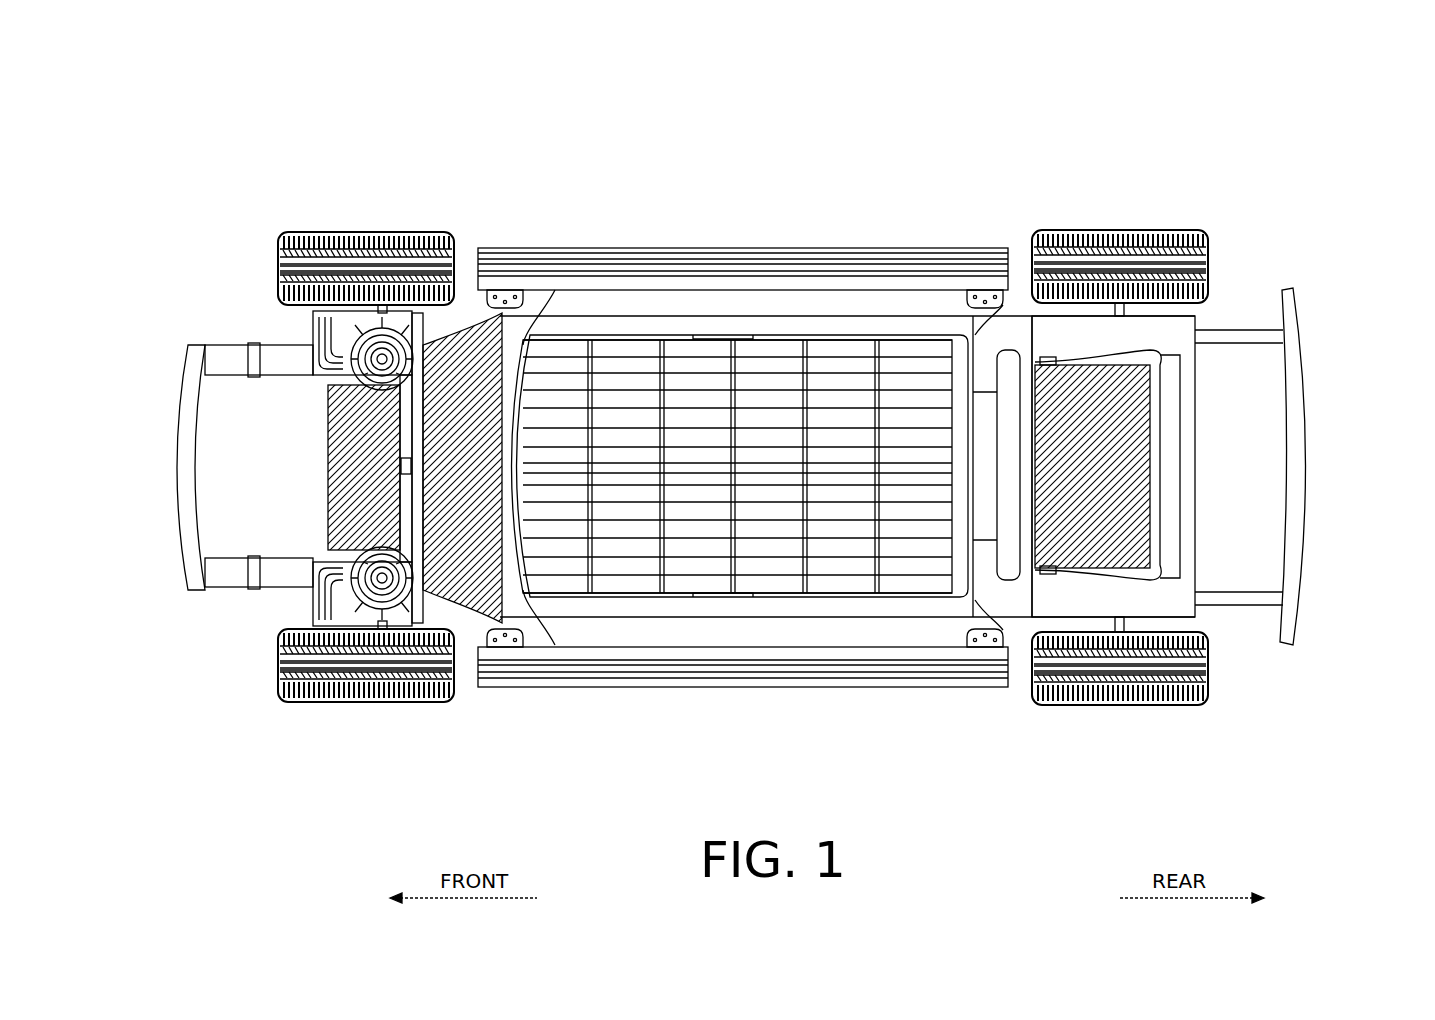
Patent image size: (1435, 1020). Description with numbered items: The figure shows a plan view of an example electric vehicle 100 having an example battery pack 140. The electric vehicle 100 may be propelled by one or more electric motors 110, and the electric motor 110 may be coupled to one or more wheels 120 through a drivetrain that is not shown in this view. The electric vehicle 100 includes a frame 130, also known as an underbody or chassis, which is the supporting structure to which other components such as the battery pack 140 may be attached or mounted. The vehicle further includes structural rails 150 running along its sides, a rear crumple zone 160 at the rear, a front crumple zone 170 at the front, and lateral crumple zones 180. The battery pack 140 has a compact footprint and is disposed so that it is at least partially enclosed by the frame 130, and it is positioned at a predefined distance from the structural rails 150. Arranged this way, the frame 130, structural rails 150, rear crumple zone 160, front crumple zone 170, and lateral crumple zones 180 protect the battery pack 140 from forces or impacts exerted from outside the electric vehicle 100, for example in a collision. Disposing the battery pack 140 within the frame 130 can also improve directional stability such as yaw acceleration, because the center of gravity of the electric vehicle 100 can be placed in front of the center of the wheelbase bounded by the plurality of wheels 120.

The electric vehicle 100 is at (308, 126).
The electric motor 110 is at (1128, 522).
The wheel 120 is at (369, 224).
The frame 130 is at (967, 322).
The battery pack 140 is at (752, 597).
The structural rail 150 is at (781, 254).
The rear crumple zone 160 is at (1232, 394).
The front crumple zone 170 is at (305, 527).
The lateral crumple zone 180 is at (605, 305).